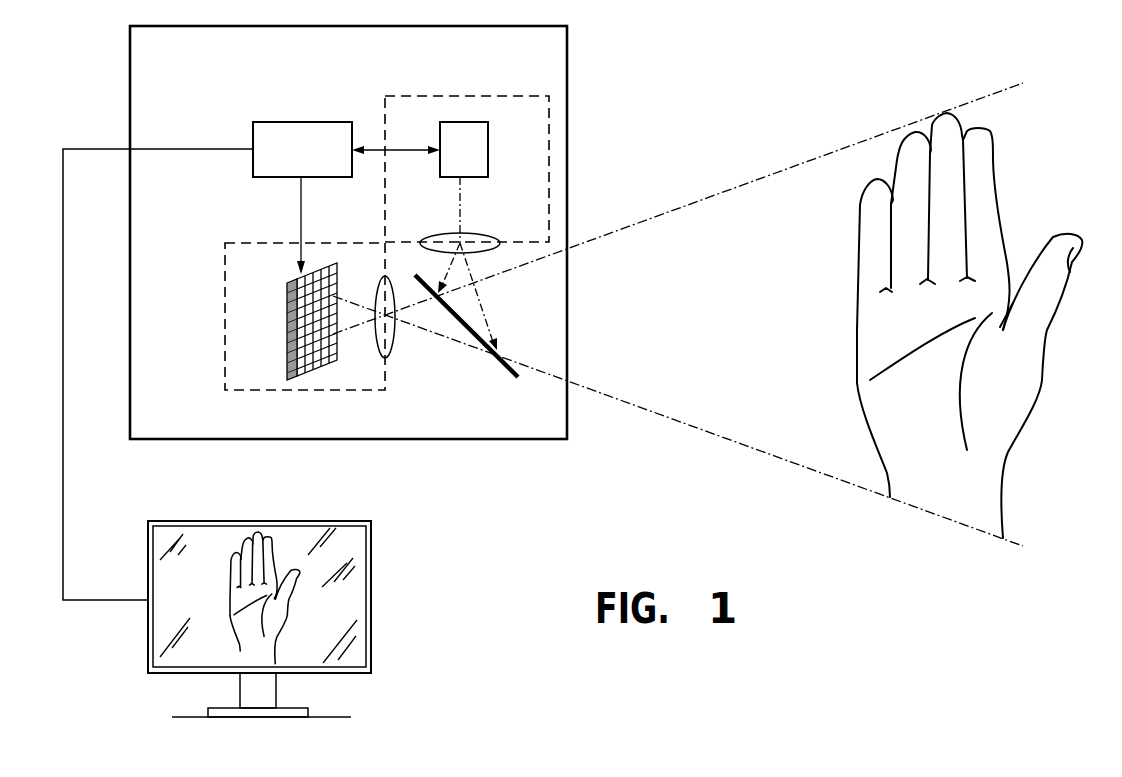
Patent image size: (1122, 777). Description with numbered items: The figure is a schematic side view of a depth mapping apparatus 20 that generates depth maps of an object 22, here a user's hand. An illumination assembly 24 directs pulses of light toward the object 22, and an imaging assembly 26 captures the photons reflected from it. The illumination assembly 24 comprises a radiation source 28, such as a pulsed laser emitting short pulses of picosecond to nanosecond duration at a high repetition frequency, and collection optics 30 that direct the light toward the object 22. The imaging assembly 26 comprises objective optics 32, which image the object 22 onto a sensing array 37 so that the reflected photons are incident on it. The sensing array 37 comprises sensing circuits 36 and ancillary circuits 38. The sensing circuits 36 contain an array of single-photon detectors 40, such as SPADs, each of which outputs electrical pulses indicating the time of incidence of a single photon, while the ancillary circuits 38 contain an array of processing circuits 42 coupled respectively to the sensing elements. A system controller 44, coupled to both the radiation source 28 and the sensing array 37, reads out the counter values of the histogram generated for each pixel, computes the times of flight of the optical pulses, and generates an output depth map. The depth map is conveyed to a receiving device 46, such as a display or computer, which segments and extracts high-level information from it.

The depth mapping apparatus 20 is at (130, 87).
The object 22 is at (1047, 331).
The illumination assembly 24 is at (437, 96).
The imaging assembly 26 is at (225, 287).
The radiation source 28 is at (450, 165).
The collection optics 30 is at (490, 236).
The objective optics 32 is at (395, 347).
The sensing circuits 36 is at (338, 276).
The sensing array 37 is at (338, 391).
The ancillary circuits 38 is at (287, 309).
The single-photon detectors 40 is at (335, 343).
The processing circuits 42 is at (292, 361).
The system controller 44 is at (295, 122).
The receiving device 46 is at (371, 606).